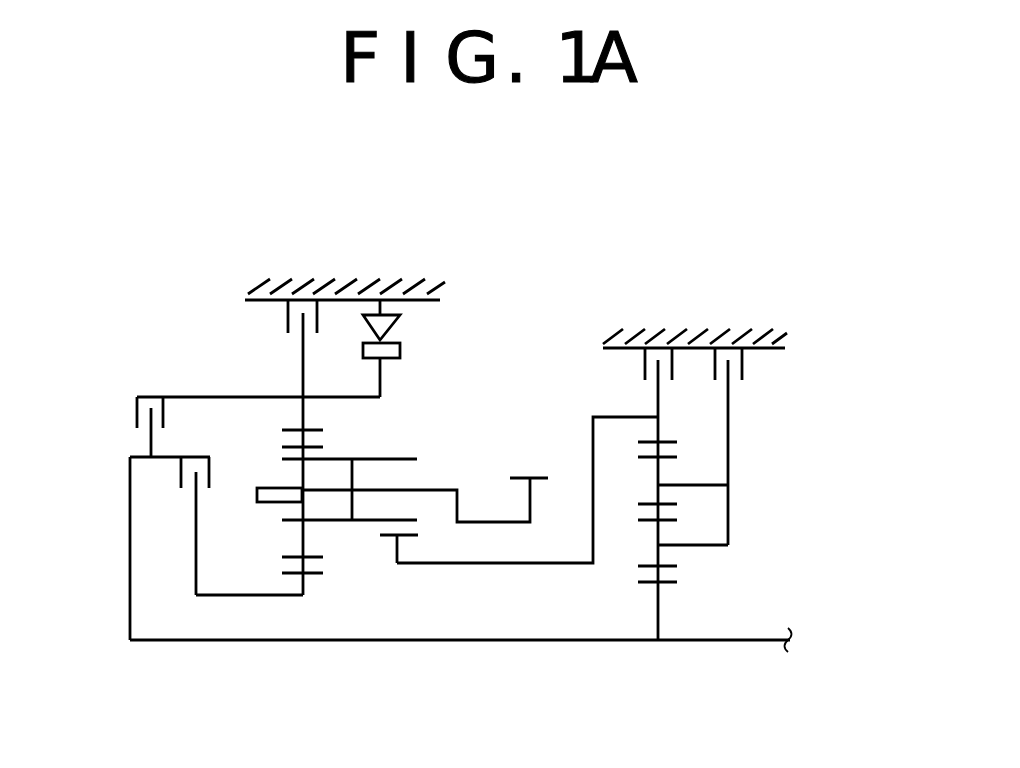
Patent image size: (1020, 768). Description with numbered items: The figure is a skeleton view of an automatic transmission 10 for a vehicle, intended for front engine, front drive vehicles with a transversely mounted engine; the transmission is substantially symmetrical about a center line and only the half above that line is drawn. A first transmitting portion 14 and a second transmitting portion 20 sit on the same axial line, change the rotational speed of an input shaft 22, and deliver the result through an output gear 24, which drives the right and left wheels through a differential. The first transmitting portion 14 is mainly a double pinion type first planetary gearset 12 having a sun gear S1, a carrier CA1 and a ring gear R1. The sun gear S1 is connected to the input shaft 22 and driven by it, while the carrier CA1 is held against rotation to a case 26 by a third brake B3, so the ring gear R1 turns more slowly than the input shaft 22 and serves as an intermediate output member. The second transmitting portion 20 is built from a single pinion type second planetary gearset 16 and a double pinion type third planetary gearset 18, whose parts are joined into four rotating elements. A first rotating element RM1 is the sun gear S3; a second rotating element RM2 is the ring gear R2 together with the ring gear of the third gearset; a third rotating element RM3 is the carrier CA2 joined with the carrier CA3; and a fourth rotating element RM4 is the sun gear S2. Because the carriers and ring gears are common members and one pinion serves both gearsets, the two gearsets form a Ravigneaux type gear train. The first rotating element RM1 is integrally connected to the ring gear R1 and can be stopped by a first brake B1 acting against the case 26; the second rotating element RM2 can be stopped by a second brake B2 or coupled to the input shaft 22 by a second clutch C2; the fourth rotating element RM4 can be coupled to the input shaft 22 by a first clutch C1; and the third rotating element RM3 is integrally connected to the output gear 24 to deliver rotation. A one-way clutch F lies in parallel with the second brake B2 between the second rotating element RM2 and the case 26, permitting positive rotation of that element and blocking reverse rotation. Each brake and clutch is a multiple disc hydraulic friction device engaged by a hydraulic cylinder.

The automatic transmission 10 is at (763, 246).
The first planetary gearset 12 is at (655, 652).
The first transmitting portion 14 is at (581, 350).
The second planetary gearset 16 is at (301, 603).
The third planetary gearset 18 is at (398, 578).
The second transmitting portion 20 is at (476, 310).
The input shaft 22 is at (757, 645).
The output gear 24 is at (517, 477).
The case 26 is at (352, 292).
The first brake B1 is at (630, 370).
The second brake B2 is at (271, 320).
The third brake B3 is at (759, 370).
The first clutch C1 is at (204, 504).
The second clutch C2 is at (167, 402).
The one-way clutch F is at (396, 348).
The sun gear S1 is at (673, 583).
The sun gear S2 is at (313, 577).
The sun gear S3 is at (388, 535).
The ring gear R1 is at (665, 440).
The ring gear R2 is at (317, 430).
The carrier CA1 is at (727, 519).
The carrier CA2 is at (276, 504).
The carrier CA3 is at (393, 490).
The first rotating element RM1 is at (478, 567).
The second rotating element RM2 is at (275, 395).
The third rotating element RM3 is at (483, 523).
The fourth rotating element RM4 is at (258, 597).